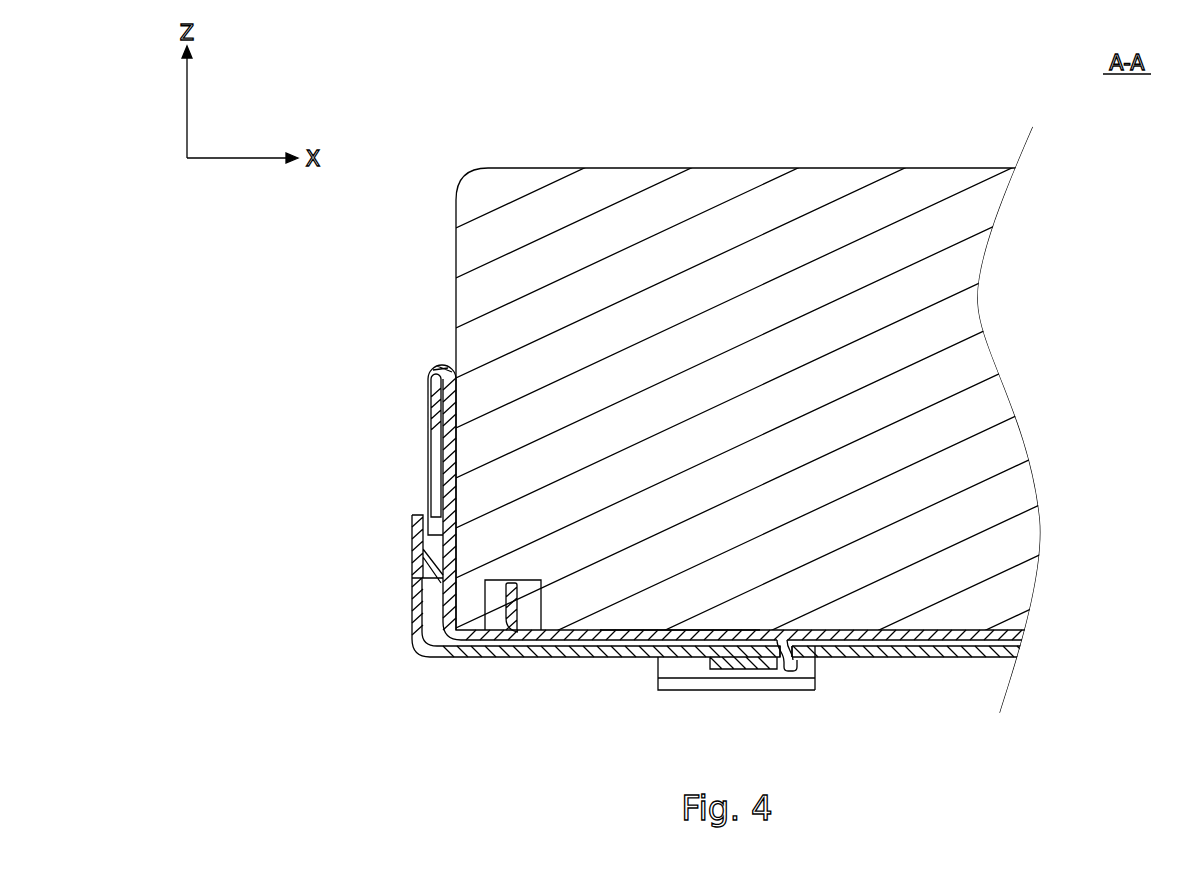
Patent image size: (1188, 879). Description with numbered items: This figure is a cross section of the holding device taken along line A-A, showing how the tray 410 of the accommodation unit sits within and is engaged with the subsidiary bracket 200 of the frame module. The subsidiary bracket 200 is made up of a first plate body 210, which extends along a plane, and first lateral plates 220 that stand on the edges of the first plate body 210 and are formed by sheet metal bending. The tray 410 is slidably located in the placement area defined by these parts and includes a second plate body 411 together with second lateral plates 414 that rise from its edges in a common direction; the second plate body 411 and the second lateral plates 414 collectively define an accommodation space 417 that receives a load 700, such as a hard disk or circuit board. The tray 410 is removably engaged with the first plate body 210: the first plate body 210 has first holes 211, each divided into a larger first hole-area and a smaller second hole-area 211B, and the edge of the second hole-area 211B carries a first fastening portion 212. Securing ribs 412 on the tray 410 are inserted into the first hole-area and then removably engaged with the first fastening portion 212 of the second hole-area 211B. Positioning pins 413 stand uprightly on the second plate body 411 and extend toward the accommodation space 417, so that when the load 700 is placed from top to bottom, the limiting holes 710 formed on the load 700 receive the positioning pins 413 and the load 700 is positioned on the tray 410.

The load 700 is at (722, 212).
The positioning pins 413 is at (510, 583).
The accommodation space 417 is at (455, 372).
The second lateral plates 414 is at (450, 462).
The first lateral plates 220 is at (412, 578).
The subsidiary bracket 200 is at (668, 651).
The tray 410 is at (702, 423).
The limiting holes 710 is at (499, 606).
The second plate body 411 is at (584, 645).
The first plate body 210 is at (636, 660).
The securing ribs 412 is at (741, 670).
The first fastening portion 212 is at (772, 660).
The first holes 211 is at (803, 656).
The second hole-area 211B is at (798, 652).